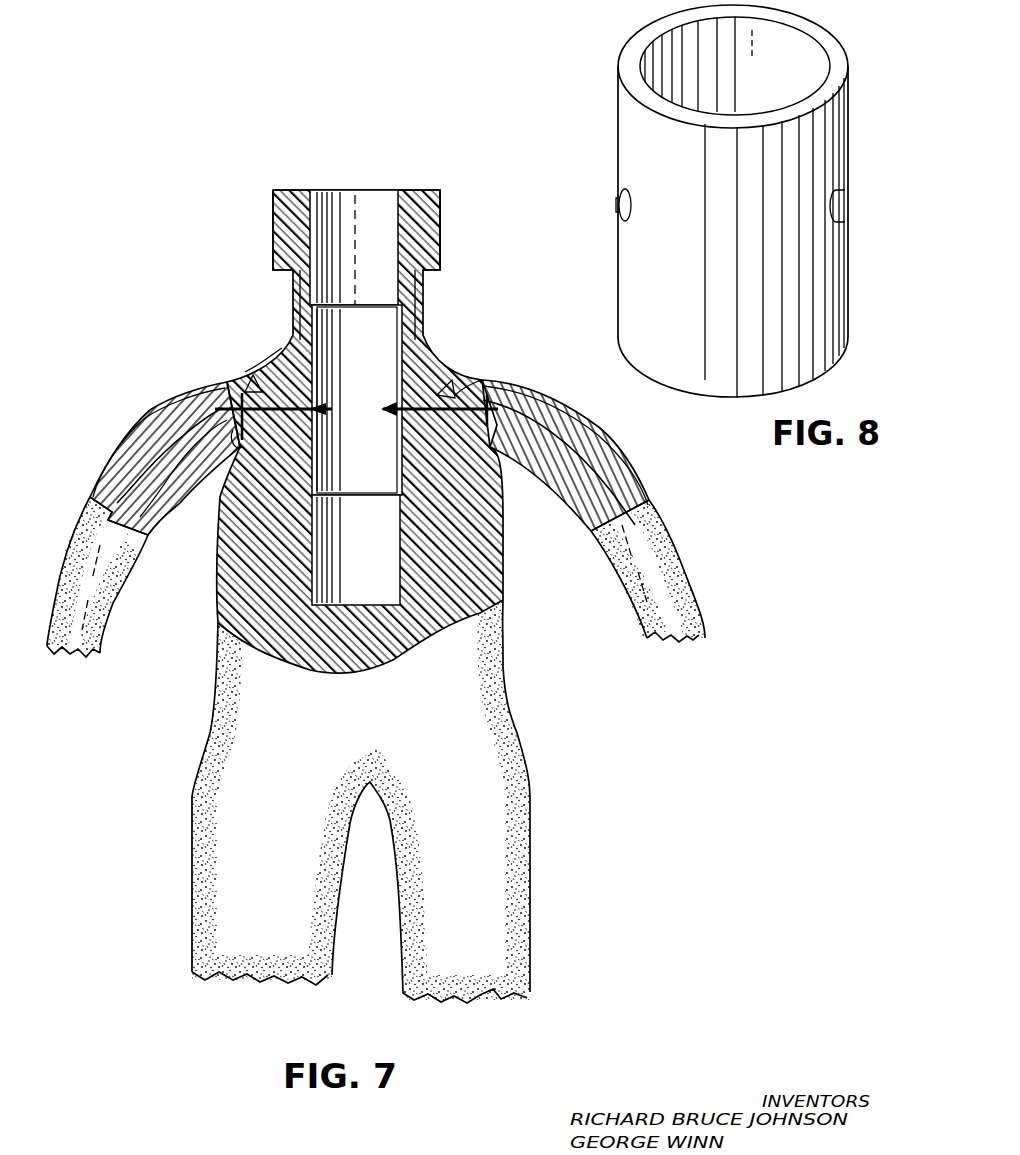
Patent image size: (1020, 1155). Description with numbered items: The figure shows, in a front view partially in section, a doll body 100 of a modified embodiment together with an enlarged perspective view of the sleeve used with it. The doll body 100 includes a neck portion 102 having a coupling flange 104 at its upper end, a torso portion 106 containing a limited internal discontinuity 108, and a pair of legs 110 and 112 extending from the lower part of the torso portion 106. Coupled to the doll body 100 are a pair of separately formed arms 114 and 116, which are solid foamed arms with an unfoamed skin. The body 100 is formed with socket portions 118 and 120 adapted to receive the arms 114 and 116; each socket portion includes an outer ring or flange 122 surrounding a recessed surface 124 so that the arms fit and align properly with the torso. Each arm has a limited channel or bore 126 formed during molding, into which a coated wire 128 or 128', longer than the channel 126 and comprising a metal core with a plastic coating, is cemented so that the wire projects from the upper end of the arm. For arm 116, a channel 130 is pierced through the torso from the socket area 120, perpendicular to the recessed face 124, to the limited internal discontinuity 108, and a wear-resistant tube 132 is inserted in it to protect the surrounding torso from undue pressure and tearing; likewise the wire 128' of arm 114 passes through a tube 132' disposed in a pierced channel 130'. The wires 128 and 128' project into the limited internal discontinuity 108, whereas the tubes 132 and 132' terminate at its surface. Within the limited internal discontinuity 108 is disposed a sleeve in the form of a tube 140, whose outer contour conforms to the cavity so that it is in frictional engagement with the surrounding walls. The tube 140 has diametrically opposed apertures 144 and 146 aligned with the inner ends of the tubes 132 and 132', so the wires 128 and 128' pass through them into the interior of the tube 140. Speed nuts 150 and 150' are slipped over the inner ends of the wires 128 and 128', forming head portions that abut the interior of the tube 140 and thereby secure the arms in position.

In FIG. 7, the doll body 100 is at (452, 688).
In FIG. 7, the neck portion 102 is at (417, 325).
In FIG. 7, the coupling flange 104 is at (440, 216).
In FIG. 7, the torso portion 106 is at (216, 563).
In FIG. 7, the limited internal discontinuity 108 is at (376, 558).
In FIG. 7, the leg 110 is at (213, 882).
In FIG. 7, the leg 112 is at (497, 913).
In FIG. 7, the arm 114 is at (86, 544).
In FIG. 7, the arm 116 is at (670, 567).
In FIG. 7, the socket portion 118 is at (166, 398).
In FIG. 7, the socket portion 120 is at (539, 386).
In FIG. 7, the outer ring or flange 122 is at (227, 457).
In FIG. 7, the recessed surface 124 is at (227, 388).
In FIG. 7, the channel or bore 126 is at (633, 498).
In FIG. 7, the coated wire 128 is at (579, 462).
In FIG. 7, the coated wire 128' is at (152, 468).
In FIG. 7, the channel 130 is at (503, 371).
In FIG. 7, the pierced channel 130' is at (259, 343).
In FIG. 7, the tube 132 is at (465, 368).
In FIG. 7, the tube 132' is at (237, 365).
In FIG. 7, the tube 140 is at (353, 223).
In FIG. 8, the tube 140 is at (635, 111).
In FIG. 8, the aperture 144 is at (620, 206).
In FIG. 8, the aperture 146 is at (842, 207).
In FIG. 7, the speed nut 150 is at (296, 388).
In FIG. 7, the speed nut 150' is at (423, 427).